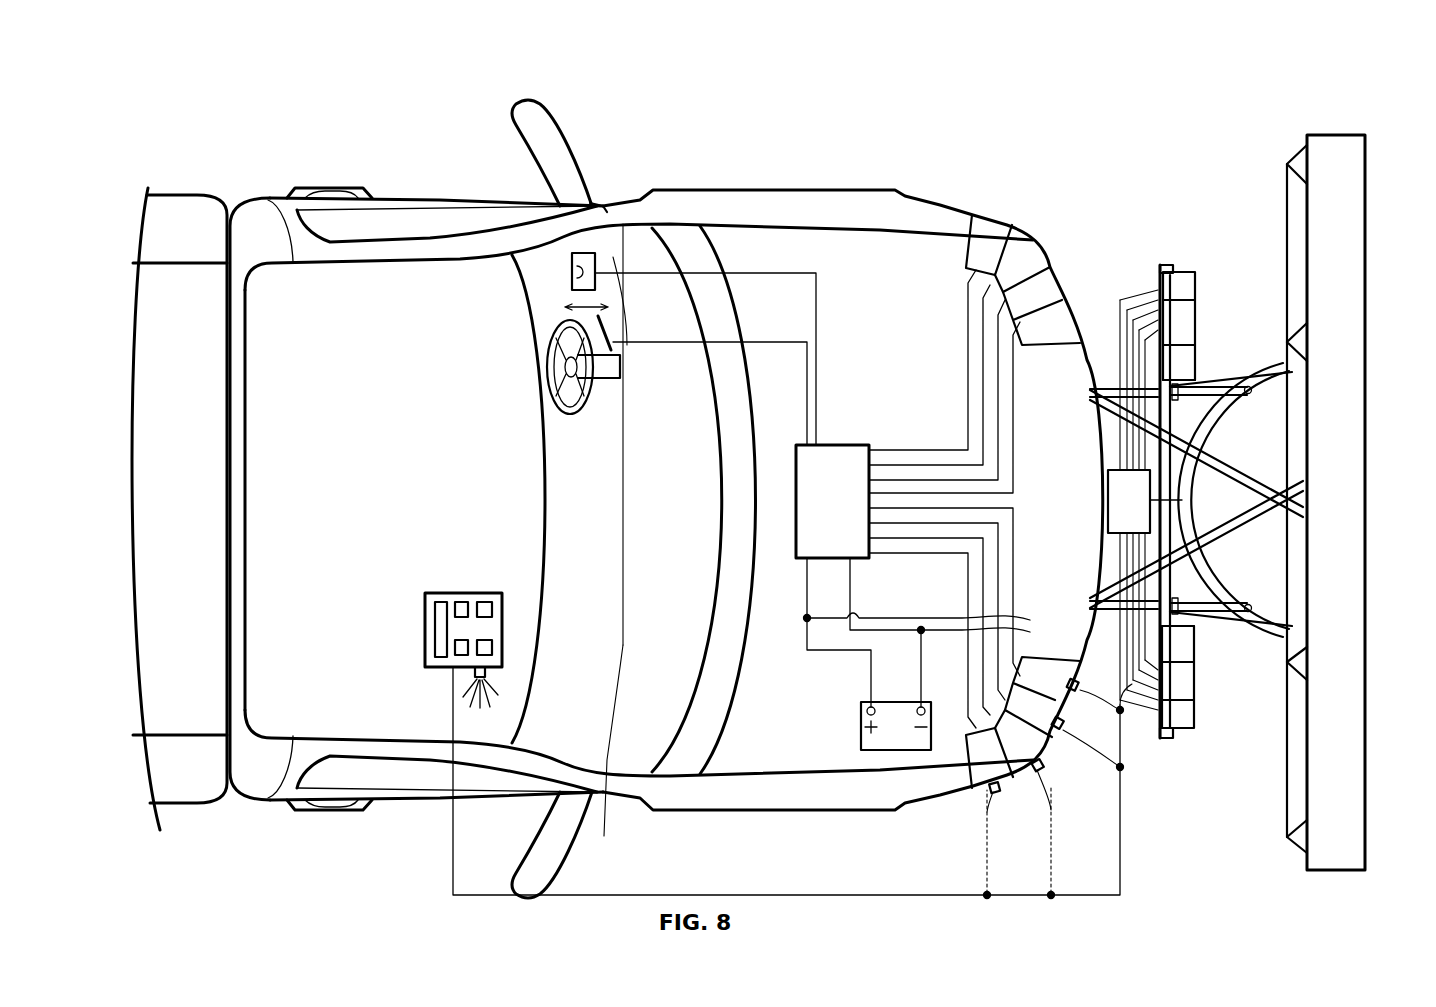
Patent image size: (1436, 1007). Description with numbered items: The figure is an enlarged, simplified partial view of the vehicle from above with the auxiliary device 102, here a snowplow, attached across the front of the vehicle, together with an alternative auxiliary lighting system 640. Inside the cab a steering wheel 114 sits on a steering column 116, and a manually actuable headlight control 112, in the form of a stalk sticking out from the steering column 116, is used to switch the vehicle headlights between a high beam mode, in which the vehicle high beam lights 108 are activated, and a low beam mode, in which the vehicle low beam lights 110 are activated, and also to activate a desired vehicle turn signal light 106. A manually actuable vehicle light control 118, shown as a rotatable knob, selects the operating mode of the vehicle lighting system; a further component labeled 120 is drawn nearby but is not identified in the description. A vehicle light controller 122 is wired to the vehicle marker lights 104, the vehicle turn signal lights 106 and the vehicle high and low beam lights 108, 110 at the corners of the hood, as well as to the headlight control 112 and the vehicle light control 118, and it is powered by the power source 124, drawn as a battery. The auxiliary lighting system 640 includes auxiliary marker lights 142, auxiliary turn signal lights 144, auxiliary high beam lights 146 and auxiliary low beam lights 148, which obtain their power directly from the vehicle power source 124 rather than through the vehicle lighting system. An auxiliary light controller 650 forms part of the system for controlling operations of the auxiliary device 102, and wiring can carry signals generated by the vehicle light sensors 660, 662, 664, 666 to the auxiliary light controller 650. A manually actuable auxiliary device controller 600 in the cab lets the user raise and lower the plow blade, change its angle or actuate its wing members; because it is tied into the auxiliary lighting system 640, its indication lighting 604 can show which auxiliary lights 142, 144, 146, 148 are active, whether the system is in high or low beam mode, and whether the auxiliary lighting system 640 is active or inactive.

The auxiliary device 102 is at (1370, 120).
The vehicle marker lights 104 is at (976, 258).
The vehicle turn signal lights 106 is at (1002, 278).
The vehicle high beam lights 108 is at (1042, 277).
The vehicle low beam lights 110 is at (1055, 308).
The manually actuable headlight control 112 is at (603, 200).
The steering wheel 114 is at (547, 350).
The steering column 116 is at (612, 367).
The manually actuable vehicle light control 118 is at (572, 283).
The input device 120 is at (613, 257).
The vehicle light controller 122 is at (830, 445).
The power source 124 is at (861, 740).
The auxiliary marker lights 142 is at (1180, 287).
The auxiliary turn signal lights 144 is at (1180, 305).
The auxiliary high beam lights 146 is at (1180, 335).
The auxiliary low beam lights 148 is at (1180, 360).
The manually actuable auxiliary device controller 600 is at (503, 610).
The indication lighting 604 is at (508, 675).
The auxiliary lighting system 640 is at (1187, 260).
The auxiliary light controller 650 is at (1108, 485).
The vehicle light sensor 660 is at (993, 789).
The vehicle light sensor 662 is at (1042, 768).
The vehicle light sensor 664 is at (1062, 730).
The vehicle light sensor 666 is at (1078, 688).